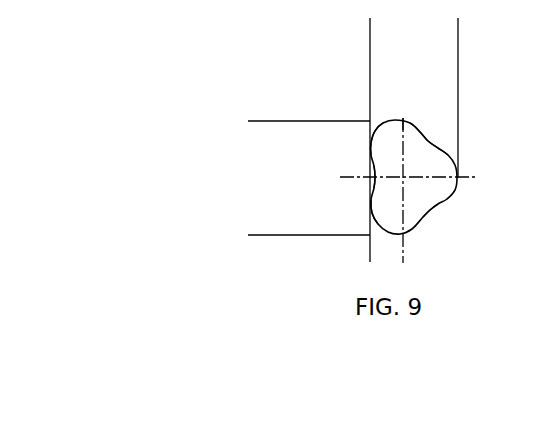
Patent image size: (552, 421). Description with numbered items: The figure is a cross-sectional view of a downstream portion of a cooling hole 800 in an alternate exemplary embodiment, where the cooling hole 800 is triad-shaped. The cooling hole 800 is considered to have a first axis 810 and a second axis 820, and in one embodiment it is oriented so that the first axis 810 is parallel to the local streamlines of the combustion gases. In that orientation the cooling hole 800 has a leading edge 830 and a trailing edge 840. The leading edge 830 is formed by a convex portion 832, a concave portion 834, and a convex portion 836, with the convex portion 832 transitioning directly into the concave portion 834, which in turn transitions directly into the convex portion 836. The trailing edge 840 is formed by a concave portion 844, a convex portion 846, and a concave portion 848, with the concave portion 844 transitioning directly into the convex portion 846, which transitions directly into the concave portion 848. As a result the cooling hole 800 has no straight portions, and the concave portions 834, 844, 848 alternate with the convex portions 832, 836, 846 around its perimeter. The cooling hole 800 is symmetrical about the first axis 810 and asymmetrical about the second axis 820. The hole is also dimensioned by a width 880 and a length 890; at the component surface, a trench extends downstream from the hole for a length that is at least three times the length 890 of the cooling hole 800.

The cooling hole 800 is at (337, 67).
The first axis 810 is at (468, 176).
The second axis 820 is at (403, 118).
The leading edge 830 is at (367, 148).
The convex portion 832 is at (366, 128).
The concave portion 834 is at (377, 182).
The convex portion 836 is at (367, 225).
The trailing edge 840 is at (435, 143).
The concave portion 844 is at (428, 132).
The convex portion 846 is at (457, 190).
The concave portion 848 is at (432, 209).
The width 880 is at (252, 121).
The length 890 is at (458, 23).